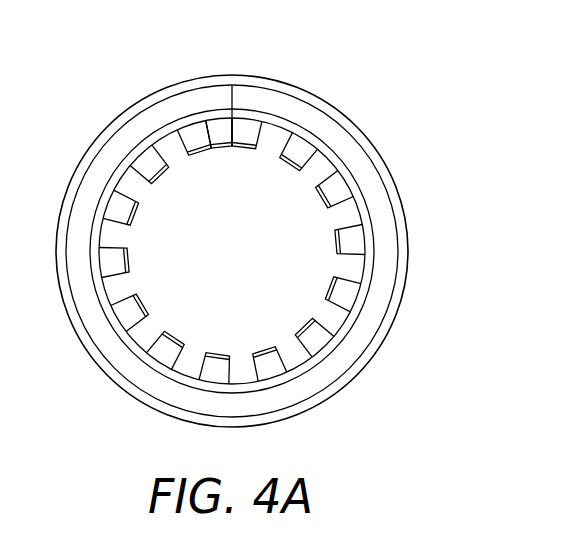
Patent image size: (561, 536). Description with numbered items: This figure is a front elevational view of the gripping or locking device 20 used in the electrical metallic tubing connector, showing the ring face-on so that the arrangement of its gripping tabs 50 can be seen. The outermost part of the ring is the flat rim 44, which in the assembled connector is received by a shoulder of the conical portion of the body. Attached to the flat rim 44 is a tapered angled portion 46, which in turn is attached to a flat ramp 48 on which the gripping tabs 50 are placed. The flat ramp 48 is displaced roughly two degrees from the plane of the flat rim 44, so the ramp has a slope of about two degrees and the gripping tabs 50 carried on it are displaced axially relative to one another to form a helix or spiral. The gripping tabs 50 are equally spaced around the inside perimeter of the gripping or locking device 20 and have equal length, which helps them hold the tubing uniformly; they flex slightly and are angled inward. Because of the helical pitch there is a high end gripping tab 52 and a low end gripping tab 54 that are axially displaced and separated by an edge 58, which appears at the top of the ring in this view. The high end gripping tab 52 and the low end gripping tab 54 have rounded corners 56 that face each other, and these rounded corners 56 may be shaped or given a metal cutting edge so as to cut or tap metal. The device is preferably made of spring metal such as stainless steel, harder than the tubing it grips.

The gripping or locking device 20 is at (343, 101).
The flat rim 44 is at (391, 172).
The tapered angled portion 46 is at (373, 305).
The flat ramp 48 is at (323, 352).
The gripping tabs 50 is at (337, 239).
The high end gripping tab 52 is at (250, 146).
The low end gripping tab 54 is at (205, 132).
The rounded corners 56 is at (210, 146).
The edge 58 is at (232, 97).